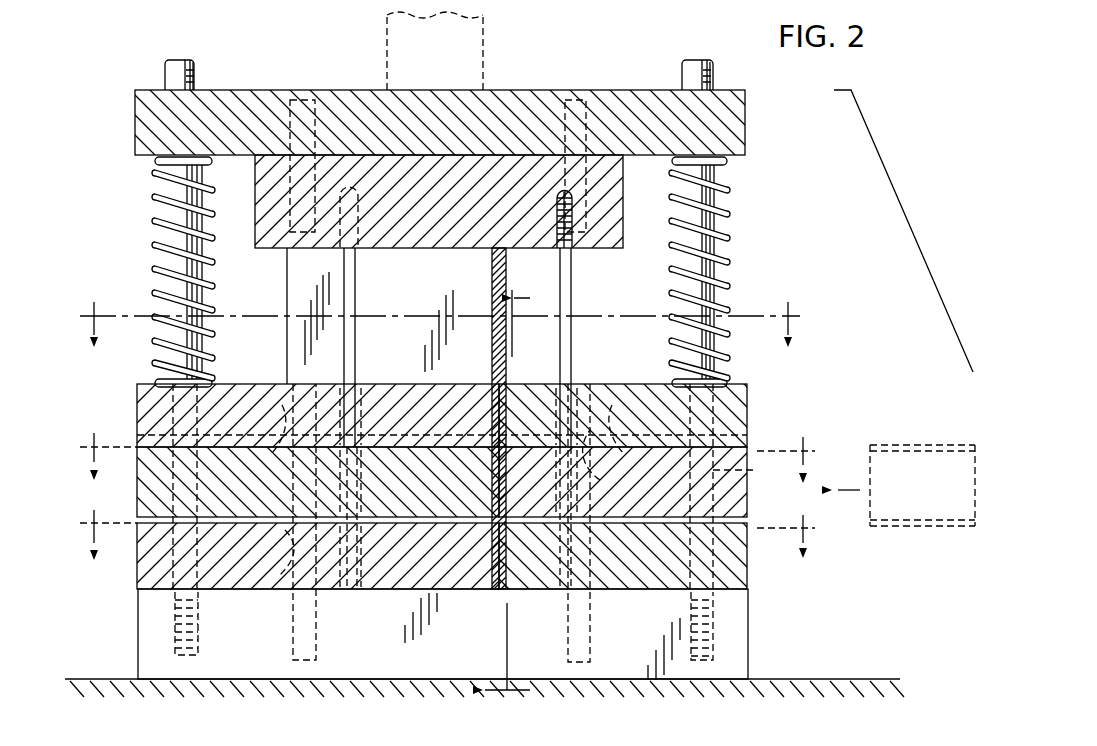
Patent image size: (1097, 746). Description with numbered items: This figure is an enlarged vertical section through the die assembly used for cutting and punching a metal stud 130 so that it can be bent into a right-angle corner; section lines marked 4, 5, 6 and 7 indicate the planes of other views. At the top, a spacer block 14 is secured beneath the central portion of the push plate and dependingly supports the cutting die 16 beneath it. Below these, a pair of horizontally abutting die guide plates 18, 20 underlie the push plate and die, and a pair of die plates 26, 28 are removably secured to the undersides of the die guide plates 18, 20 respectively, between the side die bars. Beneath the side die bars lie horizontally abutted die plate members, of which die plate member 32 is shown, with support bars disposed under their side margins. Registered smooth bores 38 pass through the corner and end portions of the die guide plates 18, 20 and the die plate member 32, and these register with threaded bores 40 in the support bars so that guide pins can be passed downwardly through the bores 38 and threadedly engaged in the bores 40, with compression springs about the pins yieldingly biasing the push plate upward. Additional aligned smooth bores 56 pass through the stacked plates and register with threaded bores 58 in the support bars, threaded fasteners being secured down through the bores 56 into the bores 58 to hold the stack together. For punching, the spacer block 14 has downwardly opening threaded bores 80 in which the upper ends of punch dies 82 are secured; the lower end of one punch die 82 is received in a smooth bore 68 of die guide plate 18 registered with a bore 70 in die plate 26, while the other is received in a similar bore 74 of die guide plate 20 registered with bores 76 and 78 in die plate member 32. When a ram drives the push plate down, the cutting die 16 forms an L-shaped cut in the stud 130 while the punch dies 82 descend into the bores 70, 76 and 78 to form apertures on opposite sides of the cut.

The spacer block 14 is at (255, 206).
The cutting die 16 is at (300, 282).
The die guide plate 18 is at (760, 400).
The die guide plate 20 is at (152, 410).
The die plate 26 is at (738, 497).
The die plate 28 is at (145, 487).
The die plate member 32 is at (143, 575).
The smooth bores 38 is at (223, 593).
The threaded bores 40 is at (713, 640).
The smooth bores 56 is at (282, 405).
The threaded bores 58 is at (316, 625).
The smooth bore 68 is at (555, 386).
The bore 70 is at (556, 462).
The bore 74 is at (362, 384).
The bore 76 is at (358, 490).
The bore 78 is at (358, 548).
The threaded bores 80 is at (368, 222).
The punch dies 82 is at (357, 288).
The metal stud 130 is at (905, 528).
The section line 4- 4 is at (439, 324).
The section line 5- 5 is at (444, 457).
The section line 6- 6 is at (446, 534).
The section line 7- 7 is at (512, 495).